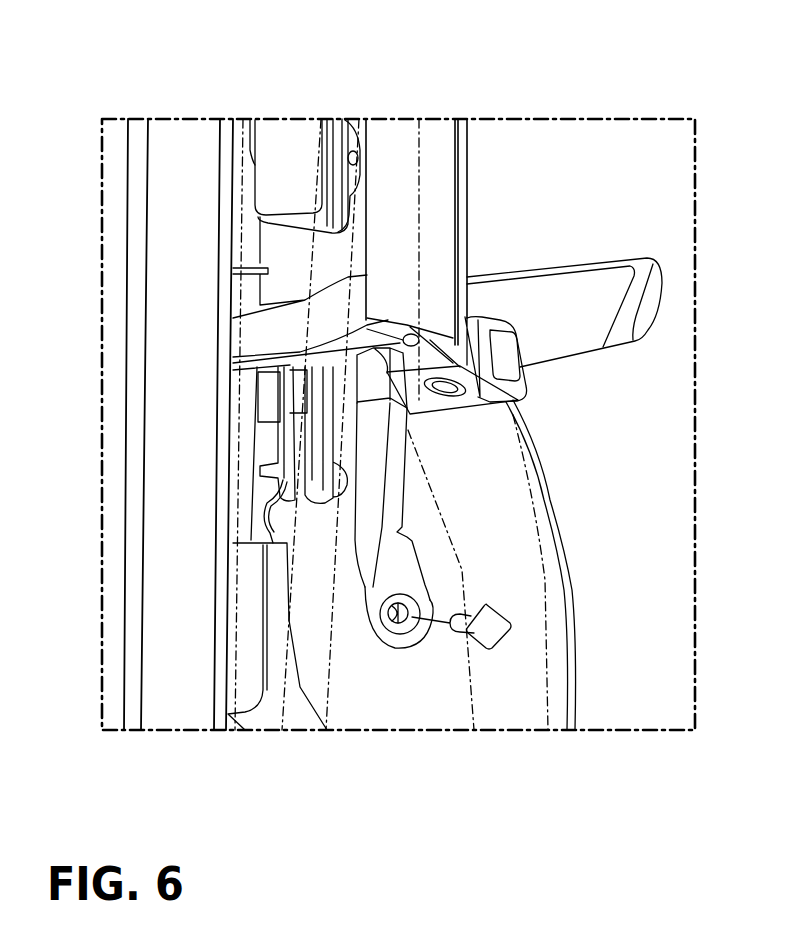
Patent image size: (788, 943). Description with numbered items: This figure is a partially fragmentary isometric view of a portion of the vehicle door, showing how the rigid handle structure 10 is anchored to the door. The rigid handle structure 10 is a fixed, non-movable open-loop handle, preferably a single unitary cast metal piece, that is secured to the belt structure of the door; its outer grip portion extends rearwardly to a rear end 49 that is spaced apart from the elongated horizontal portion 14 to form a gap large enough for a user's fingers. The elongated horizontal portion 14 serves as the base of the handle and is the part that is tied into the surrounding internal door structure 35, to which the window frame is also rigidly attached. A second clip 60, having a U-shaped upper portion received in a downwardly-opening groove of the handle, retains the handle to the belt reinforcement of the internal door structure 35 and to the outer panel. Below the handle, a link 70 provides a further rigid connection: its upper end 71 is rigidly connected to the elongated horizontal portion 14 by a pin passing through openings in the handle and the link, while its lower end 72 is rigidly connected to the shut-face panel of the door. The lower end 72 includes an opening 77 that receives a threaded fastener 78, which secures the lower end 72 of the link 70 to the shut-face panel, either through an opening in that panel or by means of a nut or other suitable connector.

The rigid handle structure 10 is at (571, 263).
The rear end 49 is at (662, 290).
The elongated horizontal portion 14 is at (520, 392).
The upper end 71 is at (403, 497).
The link 70 is at (445, 403).
The second clip 60 is at (273, 420).
The internal door structure 35 is at (275, 660).
The lower end 72 is at (392, 647).
The opening 77 is at (405, 632).
The threaded fastener 78 is at (505, 635).